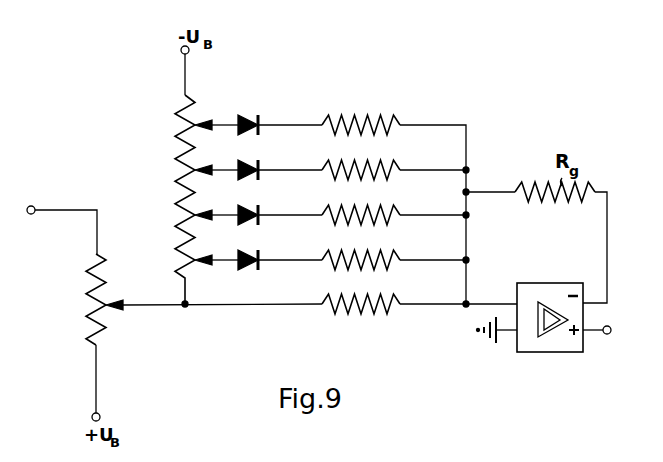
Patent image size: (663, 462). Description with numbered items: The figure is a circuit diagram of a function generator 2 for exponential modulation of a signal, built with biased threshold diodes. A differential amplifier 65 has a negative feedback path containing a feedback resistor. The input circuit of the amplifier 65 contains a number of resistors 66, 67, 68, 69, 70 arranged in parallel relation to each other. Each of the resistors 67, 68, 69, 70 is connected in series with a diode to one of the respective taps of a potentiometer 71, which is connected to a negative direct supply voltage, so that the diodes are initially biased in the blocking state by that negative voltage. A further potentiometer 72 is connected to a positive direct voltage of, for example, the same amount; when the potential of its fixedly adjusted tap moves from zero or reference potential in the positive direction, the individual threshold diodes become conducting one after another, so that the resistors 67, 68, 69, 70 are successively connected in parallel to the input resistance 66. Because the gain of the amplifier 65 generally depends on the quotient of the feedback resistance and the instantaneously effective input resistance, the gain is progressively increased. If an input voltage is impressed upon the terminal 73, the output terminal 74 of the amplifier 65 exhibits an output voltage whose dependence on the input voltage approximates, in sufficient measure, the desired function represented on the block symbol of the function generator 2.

The function generator 2 is at (508, 138).
The differential amplifier 65 is at (547, 352).
The input resistance 66 is at (393, 307).
The resistor 67 is at (393, 263).
The resistor 68 is at (393, 218).
The resistor 69 is at (393, 173).
The resistor 70 is at (393, 128).
The potentiometer 71 is at (175, 152).
The further potentiometer 72 is at (85, 312).
The terminal 73 is at (29, 214).
The output terminal 74 is at (607, 334).